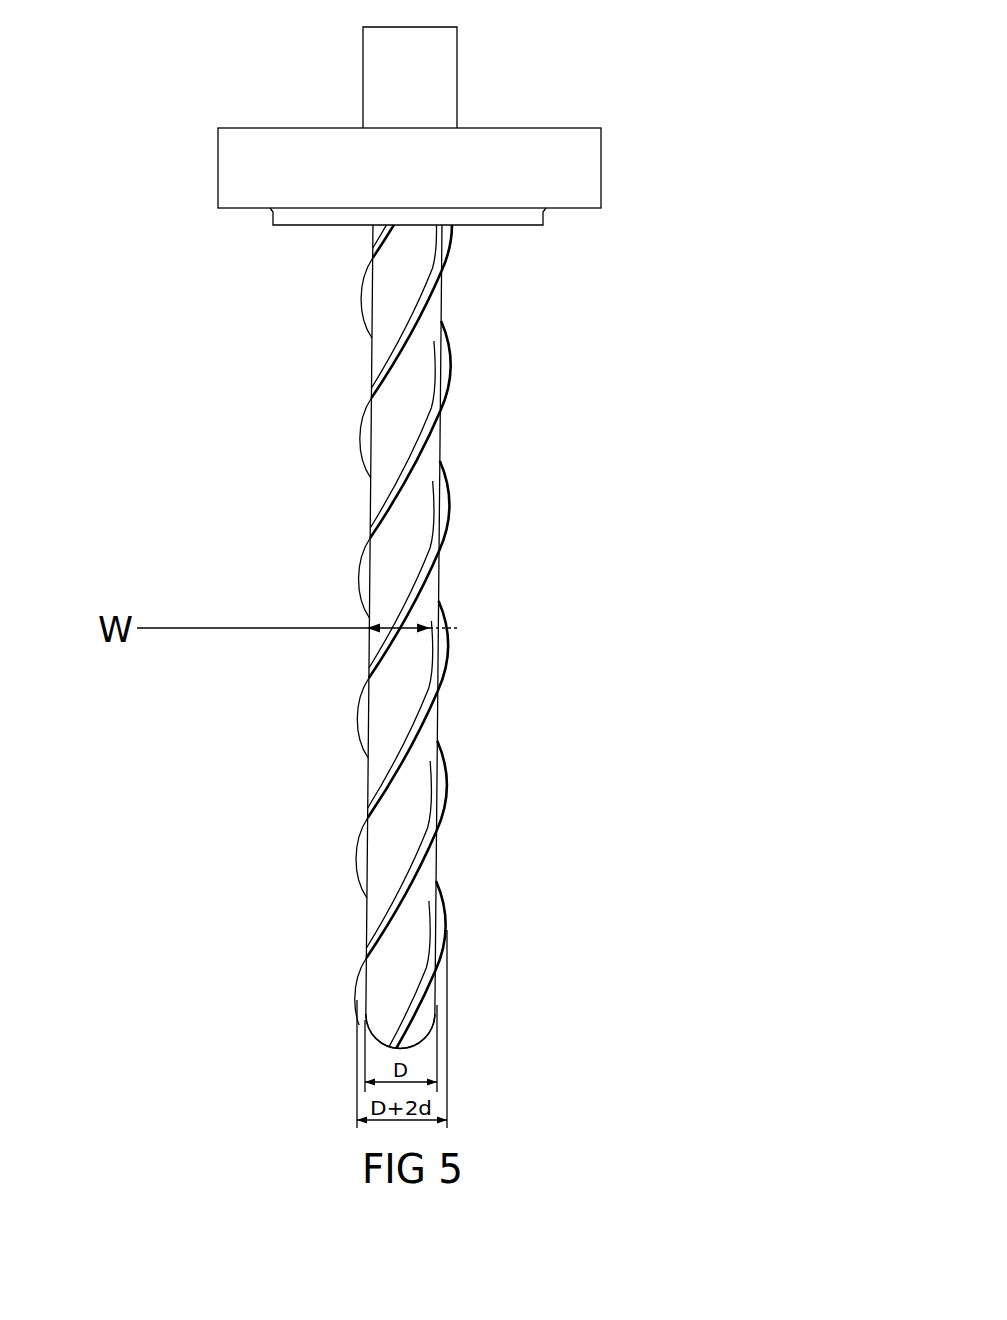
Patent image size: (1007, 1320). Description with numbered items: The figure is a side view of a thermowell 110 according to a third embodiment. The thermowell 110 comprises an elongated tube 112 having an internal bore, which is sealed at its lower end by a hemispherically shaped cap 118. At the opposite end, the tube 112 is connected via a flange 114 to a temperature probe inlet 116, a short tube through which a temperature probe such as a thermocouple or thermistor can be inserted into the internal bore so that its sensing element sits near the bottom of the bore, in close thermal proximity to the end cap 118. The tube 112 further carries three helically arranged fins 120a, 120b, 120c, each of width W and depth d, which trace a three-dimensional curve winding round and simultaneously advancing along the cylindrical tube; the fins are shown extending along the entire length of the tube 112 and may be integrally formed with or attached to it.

The thermowell 110 is at (245, 422).
The elongated tube 112 is at (395, 552).
The flange 114 is at (252, 162).
The temperature probe inlet 116 is at (433, 75).
The hemispherically shaped cap 118 is at (476, 1045).
The helically arranged fin 120a is at (452, 928).
The helically arranged fin 120b is at (452, 792).
The helically arranged fin 120c is at (452, 653).